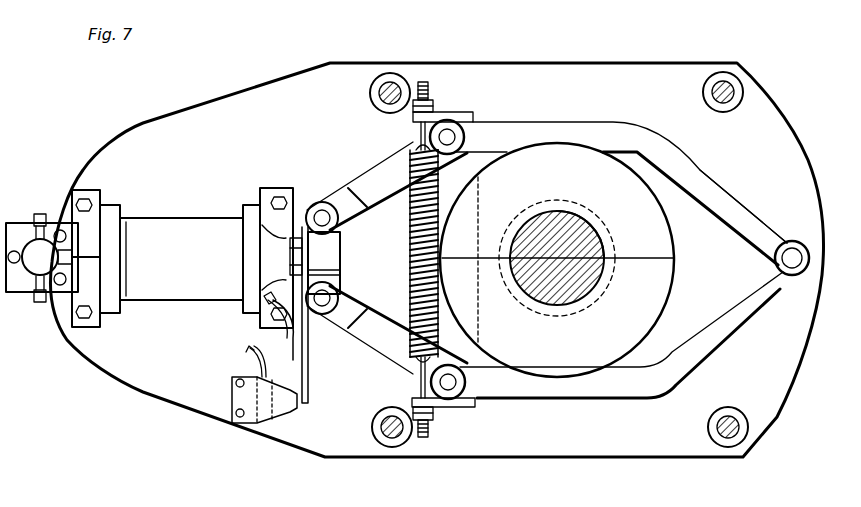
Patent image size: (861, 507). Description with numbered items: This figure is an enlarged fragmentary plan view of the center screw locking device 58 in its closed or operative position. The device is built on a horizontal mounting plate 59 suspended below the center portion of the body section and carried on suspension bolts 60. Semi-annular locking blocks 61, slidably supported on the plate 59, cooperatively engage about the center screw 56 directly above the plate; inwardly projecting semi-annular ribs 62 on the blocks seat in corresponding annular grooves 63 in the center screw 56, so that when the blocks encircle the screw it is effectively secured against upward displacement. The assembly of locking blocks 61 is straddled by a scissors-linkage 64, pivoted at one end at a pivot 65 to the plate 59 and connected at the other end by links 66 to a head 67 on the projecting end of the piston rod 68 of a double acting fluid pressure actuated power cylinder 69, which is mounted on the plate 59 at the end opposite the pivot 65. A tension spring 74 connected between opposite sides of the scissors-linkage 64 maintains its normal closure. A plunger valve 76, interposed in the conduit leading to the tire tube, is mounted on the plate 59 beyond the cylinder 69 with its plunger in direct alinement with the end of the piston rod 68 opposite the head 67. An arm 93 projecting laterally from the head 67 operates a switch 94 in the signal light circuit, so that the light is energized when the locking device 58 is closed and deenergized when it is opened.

The center screw 56 is at (540, 230).
The locking device 58 is at (503, 404).
The mounting plate 59 is at (557, 80).
The suspension bolts 60 is at (703, 93).
The locking blocks 61 is at (640, 272).
The ribs 62 is at (530, 308).
The annular grooves 63 is at (588, 297).
The scissors-linkage 64 is at (695, 333).
The pivot 65 is at (792, 262).
The links 66 is at (375, 180).
The head 67 is at (338, 275).
The piston rod 68 is at (258, 256).
The power cylinder 69 is at (174, 226).
The tension spring 74 is at (412, 260).
The plunger valve 76 is at (38, 268).
The arm 93 is at (310, 357).
The switch 94 is at (277, 407).